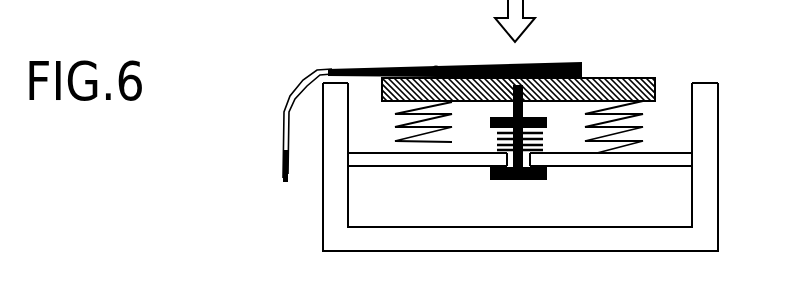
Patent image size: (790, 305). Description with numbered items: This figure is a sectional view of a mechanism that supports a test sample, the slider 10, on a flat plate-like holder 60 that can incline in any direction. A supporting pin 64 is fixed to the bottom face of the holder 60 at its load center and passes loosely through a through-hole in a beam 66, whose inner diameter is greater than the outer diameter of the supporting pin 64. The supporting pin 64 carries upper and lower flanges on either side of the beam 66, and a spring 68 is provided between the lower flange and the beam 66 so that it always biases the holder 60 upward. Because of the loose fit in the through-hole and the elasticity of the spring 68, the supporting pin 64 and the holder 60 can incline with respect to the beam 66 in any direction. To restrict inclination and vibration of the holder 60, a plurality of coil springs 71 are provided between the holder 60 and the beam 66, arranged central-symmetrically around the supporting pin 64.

The slider 10 is at (475, 64).
The holder 60 is at (520, 61).
The supporting pin 64 is at (519, 180).
The beam 66 is at (673, 161).
The spring 68 is at (636, 177).
The coil springs 71 is at (641, 122).